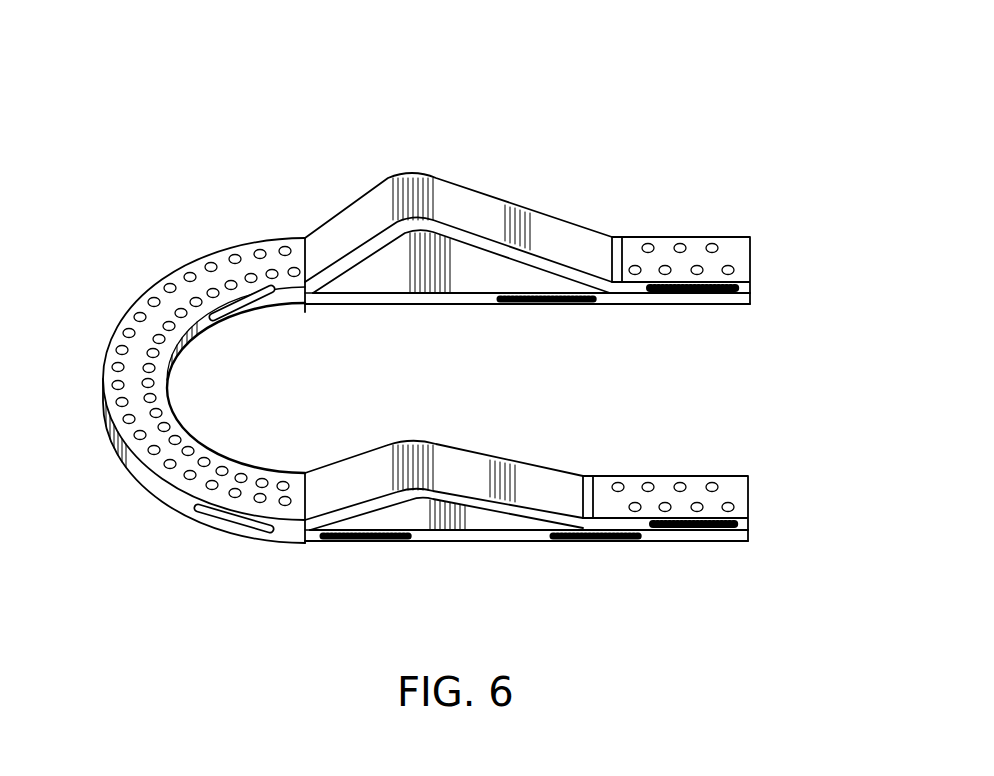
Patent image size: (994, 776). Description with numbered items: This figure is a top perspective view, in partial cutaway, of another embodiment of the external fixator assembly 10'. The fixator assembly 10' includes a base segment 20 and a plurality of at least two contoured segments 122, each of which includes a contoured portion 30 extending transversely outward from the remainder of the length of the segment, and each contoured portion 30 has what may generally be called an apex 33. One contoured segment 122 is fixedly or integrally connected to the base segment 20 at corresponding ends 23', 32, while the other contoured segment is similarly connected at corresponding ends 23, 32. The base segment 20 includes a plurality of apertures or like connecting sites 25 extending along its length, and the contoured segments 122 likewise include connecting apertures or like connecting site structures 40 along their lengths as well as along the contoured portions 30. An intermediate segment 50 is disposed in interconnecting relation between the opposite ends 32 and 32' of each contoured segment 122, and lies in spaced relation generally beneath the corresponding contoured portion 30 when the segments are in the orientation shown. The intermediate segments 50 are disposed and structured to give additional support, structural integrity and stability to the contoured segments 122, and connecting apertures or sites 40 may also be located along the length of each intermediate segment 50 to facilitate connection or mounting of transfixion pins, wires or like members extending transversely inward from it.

The external fixator assembly 10' is at (427, 279).
The base segment 20 is at (208, 245).
The connecting sites 25 is at (130, 333).
The end 23 is at (268, 449).
The end 23' is at (267, 214).
The contoured portion 30 is at (536, 190).
The apex 33 is at (418, 197).
The end 32 is at (330, 463).
The end 32' is at (691, 463).
The intermediate segment 50 is at (479, 303).
The connecting apertures 40 is at (711, 243).
The contoured segment 122 is at (726, 230).